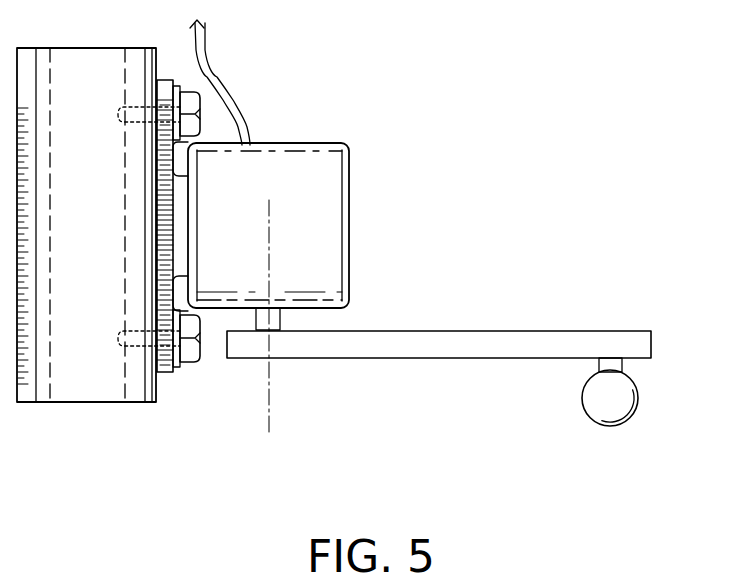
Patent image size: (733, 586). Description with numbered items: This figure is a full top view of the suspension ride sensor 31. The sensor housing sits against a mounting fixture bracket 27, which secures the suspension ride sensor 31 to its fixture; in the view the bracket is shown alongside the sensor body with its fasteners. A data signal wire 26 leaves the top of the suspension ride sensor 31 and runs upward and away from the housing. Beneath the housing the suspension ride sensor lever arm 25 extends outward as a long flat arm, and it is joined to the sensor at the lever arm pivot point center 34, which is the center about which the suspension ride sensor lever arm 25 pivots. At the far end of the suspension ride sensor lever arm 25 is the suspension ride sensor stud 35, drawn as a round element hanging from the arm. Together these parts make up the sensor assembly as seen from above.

The suspension ride sensor lever arm 25 is at (467, 343).
The data signal wire 26 is at (237, 96).
The mounting fixture bracket 27 is at (165, 363).
The suspension ride sensor 31 is at (320, 238).
The lever arm pivot point center 34 is at (270, 317).
The suspension ride sensor stud 35 is at (612, 407).